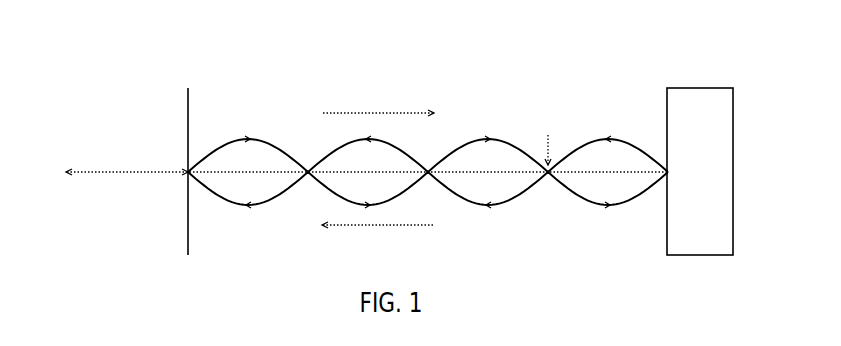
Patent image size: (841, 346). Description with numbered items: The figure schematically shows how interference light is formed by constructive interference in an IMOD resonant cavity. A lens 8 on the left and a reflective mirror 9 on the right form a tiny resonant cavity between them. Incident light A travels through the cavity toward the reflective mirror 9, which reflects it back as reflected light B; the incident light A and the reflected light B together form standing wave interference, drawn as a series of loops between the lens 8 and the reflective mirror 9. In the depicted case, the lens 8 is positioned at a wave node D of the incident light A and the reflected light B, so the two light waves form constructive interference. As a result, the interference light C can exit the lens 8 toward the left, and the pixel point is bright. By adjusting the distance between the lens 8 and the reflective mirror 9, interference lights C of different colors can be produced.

The lens 8 is at (192, 123).
The reflective mirror 9 is at (698, 127).
The incident light A is at (378, 103).
The reflected light B is at (377, 240).
The interference light C is at (366, 158).
The wave node D is at (545, 131).